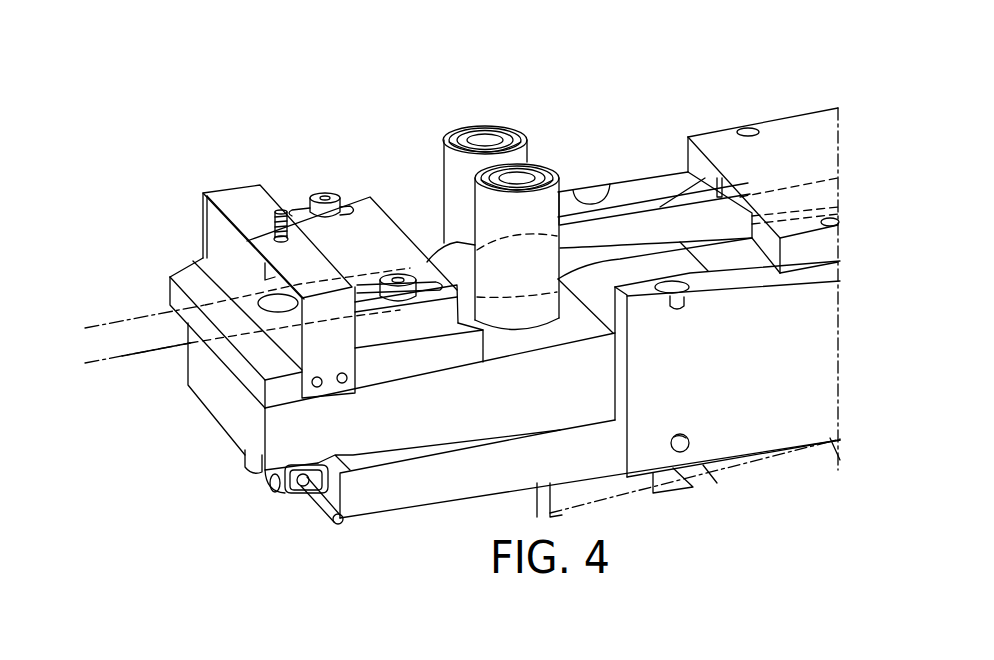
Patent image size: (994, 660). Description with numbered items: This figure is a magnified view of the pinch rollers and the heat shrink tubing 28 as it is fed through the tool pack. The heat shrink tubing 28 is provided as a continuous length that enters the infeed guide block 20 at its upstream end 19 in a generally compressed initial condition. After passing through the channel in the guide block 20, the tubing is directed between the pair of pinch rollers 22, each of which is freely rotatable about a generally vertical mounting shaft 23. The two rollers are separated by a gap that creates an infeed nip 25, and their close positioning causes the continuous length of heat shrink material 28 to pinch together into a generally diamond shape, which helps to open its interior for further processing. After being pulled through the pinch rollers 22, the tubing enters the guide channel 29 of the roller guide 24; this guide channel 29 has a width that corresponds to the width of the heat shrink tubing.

The upstream end 19 is at (232, 358).
The infeed guide block 20 is at (398, 243).
The pinch rollers 22 is at (500, 128).
The mounting shaft 23 is at (522, 176).
The roller guide 24 is at (792, 148).
The infeed nip 25 is at (458, 182).
The heat shrink tubing 28 is at (167, 353).
The guide channel 29 is at (731, 185).